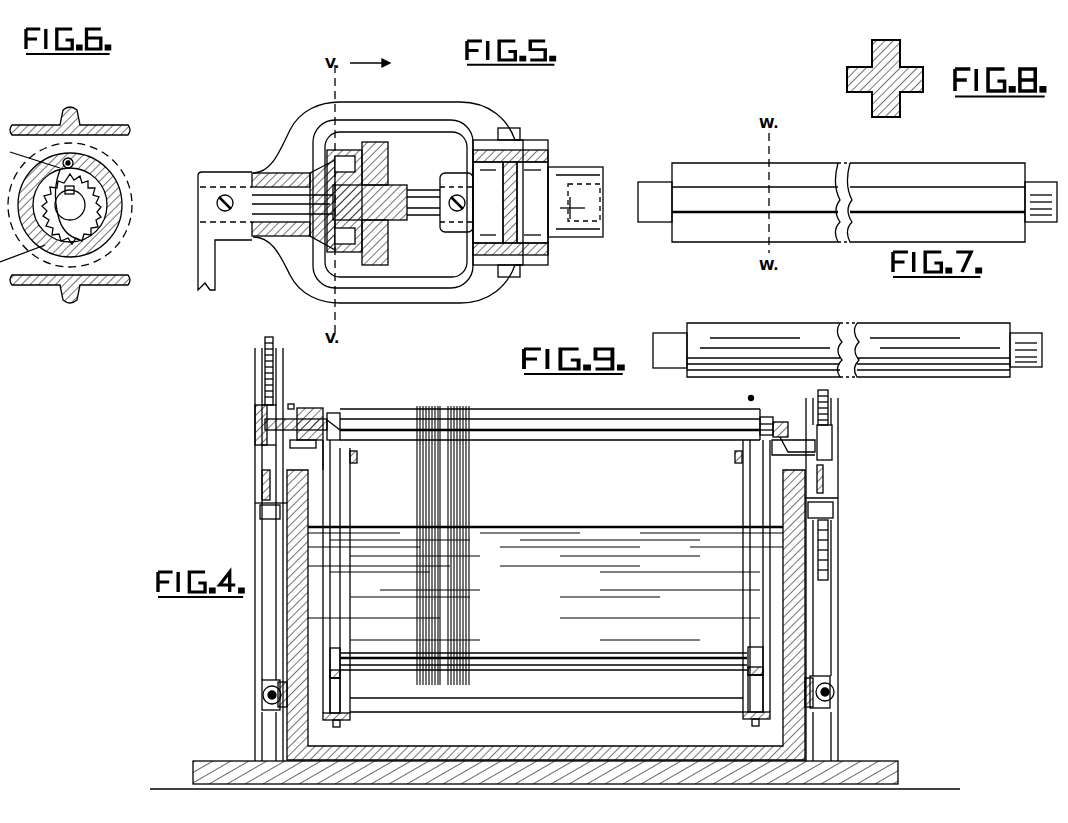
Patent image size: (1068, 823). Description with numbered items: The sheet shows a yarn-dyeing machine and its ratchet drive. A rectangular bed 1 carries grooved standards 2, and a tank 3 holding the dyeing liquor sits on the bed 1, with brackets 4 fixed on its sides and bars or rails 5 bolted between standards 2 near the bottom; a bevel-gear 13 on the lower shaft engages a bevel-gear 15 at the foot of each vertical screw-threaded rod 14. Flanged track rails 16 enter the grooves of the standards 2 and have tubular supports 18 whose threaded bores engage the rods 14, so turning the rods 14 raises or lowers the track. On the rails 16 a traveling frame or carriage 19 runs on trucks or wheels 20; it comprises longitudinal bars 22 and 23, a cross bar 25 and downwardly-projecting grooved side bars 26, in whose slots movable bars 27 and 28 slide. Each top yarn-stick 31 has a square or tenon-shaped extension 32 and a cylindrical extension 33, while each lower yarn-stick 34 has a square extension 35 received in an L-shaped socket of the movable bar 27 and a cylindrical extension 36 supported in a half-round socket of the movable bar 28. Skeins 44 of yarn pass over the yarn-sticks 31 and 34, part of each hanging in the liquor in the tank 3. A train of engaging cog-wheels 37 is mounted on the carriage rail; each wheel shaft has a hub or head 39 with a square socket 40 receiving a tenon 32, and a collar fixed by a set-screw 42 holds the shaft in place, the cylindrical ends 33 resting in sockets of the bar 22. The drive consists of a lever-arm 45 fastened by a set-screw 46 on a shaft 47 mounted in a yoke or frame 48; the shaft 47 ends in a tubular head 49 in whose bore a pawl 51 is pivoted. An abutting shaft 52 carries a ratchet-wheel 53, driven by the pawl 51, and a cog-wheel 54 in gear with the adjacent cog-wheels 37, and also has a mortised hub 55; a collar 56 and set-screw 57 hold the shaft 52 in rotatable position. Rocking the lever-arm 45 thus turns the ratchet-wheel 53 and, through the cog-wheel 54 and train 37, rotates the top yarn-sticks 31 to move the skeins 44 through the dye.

In FIG. 4, the bed 1 is at (193, 763).
In FIG. 4, the standards 2 is at (256, 728).
In FIG. 4, the tank 3 is at (546, 615).
In FIG. 4, the brackets 4 is at (255, 503).
In FIG. 4, the bars or rails 5 is at (262, 709).
In FIG. 4, the bevel-gear 13 is at (263, 694).
In FIG. 4, the screw-threaded rod 14 is at (264, 345).
In FIG. 4, the bevel-gear 15 is at (278, 690).
In FIG. 4, the rails 16 is at (262, 486).
In FIG. 4, the tubular portion or support 18 is at (262, 512).
In FIG. 4, the traveling frame or carriage 19 is at (306, 417).
In FIG. 4, the trucks or wheels 20 is at (262, 458).
In FIG. 4, the longitudinal bar 22 is at (780, 422).
In FIG. 4, the longitudinal bars 23 is at (357, 457).
In FIG. 4, the cross bar 25 is at (546, 714).
In FIG. 4, the side bars 26 is at (743, 600).
In FIG. 4, the movable bar 27 is at (757, 682).
In FIG. 4, the movable bar 28 is at (340, 680).
In FIG. 4, the top yarn-stick 31 is at (512, 435).
In FIG. 7, the top yarn-stick 31 is at (848, 193).
In FIG. 8, the top yarn-stick 31 is at (884, 78).
In FIG. 7, the square or tenon-shaped extension 32 is at (655, 202).
In FIG. 4, the round or cylindrical extension 33 is at (766, 417).
In FIG. 7, the round or cylindrical extension 33 is at (1041, 211).
In FIG. 4, the lower yarn-stick 34 is at (543, 672).
In FIG. 9, the lower yarn-stick 34 is at (848, 341).
In FIG. 4, the square or tenon-shaped extension 35 is at (340, 660).
In FIG. 9, the square or tenon-shaped extension 35 is at (668, 341).
In FIG. 4, the cylindrical extension 36 is at (748, 656).
In FIG. 9, the cylindrical extension 36 is at (1026, 339).
In FIG. 4, the cog-wheels 37 is at (255, 438).
In FIG. 4, the hub or head 39 is at (333, 445).
In FIG. 4, the central mortise or square socket 40 is at (340, 420).
In FIG. 4, the set-screw 42 is at (292, 404).
In FIG. 4, the skeins 44 is at (418, 482).
In FIG. 5, the lever-arm 45 is at (225, 231).
In FIG. 5, the set-screw 46 is at (217, 204).
In FIG. 5, the shaft 47 is at (293, 205).
In FIG. 5, the yoke or frame 48 is at (400, 193).
In FIG. 6, the yoke or frame 48 is at (70, 208).
In FIG. 5, the tubular head 49 is at (348, 252).
In FIG. 5, the pawl 51 is at (385, 170).
In FIG. 6, the pawl 51 is at (74, 165).
In FIG. 5, the shaft 52 is at (386, 213).
In FIG. 6, the shaft 52 is at (71, 209).
In FIG. 5, the ratchet-wheel 53 is at (422, 210).
In FIG. 6, the ratchet-wheel 53 is at (100, 185).
In FIG. 5, the cog-wheel 54 is at (387, 243).
In FIG. 5, the mortised hub 55 is at (575, 191).
In FIG. 5, the collar 56 is at (494, 210).
In FIG. 5, the set-screw 57 is at (466, 203).